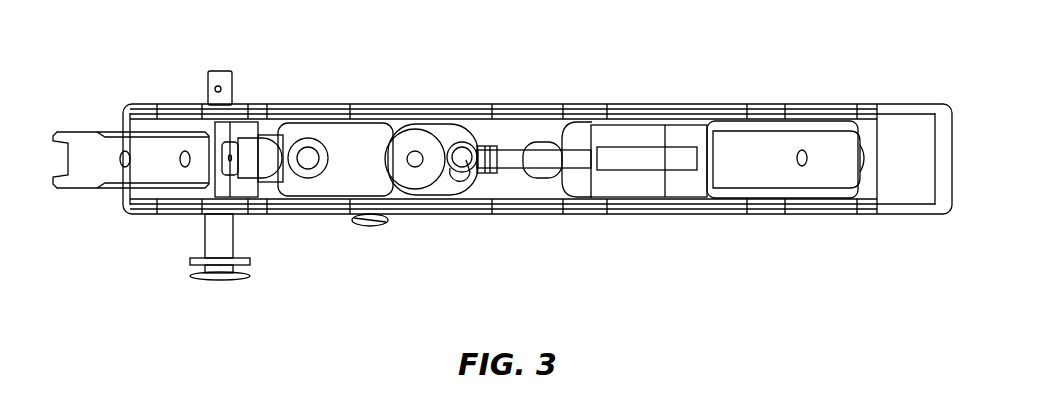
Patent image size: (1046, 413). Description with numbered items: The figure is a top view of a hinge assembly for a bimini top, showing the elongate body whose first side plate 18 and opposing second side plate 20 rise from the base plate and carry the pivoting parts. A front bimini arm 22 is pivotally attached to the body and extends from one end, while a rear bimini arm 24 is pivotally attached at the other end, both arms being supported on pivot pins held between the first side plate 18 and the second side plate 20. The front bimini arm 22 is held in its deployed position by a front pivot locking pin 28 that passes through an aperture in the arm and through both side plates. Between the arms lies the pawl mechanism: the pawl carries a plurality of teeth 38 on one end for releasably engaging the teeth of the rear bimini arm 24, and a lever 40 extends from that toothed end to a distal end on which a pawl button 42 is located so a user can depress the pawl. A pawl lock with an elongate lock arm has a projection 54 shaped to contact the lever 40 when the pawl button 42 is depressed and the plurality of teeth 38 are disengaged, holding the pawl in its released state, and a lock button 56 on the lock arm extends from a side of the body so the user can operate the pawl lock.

The first side plate 18 is at (870, 214).
The second side plate 20 is at (872, 104).
The front bimini arm 22 is at (109, 130).
The rear bimini arm 24 is at (827, 132).
The front pivot locking pin 28 is at (227, 70).
The plurality of teeth 38 is at (591, 148).
The lever 40 is at (519, 150).
The pawl button 42 is at (413, 128).
The projection 54 is at (464, 142).
The lock button 56 is at (369, 227).